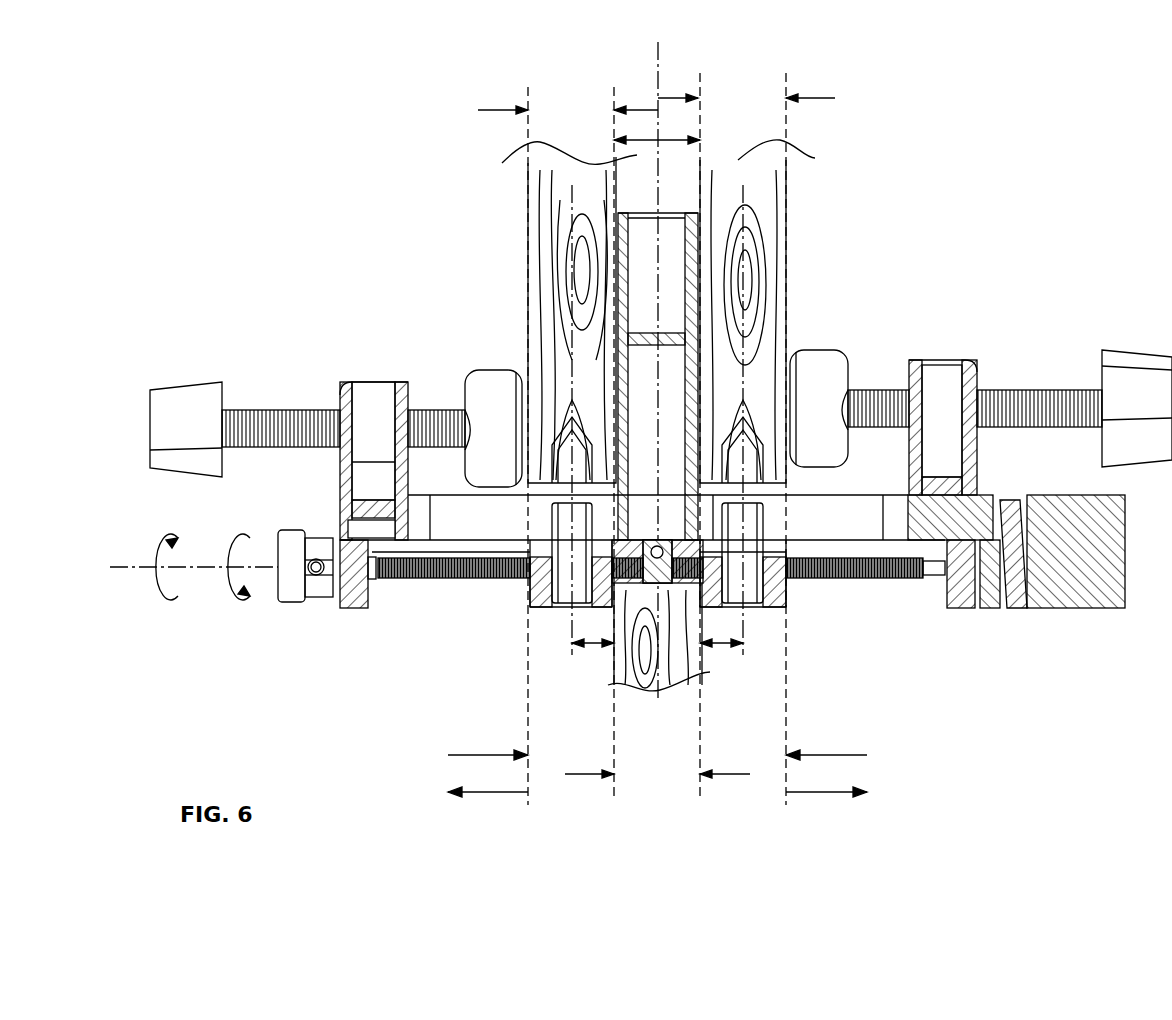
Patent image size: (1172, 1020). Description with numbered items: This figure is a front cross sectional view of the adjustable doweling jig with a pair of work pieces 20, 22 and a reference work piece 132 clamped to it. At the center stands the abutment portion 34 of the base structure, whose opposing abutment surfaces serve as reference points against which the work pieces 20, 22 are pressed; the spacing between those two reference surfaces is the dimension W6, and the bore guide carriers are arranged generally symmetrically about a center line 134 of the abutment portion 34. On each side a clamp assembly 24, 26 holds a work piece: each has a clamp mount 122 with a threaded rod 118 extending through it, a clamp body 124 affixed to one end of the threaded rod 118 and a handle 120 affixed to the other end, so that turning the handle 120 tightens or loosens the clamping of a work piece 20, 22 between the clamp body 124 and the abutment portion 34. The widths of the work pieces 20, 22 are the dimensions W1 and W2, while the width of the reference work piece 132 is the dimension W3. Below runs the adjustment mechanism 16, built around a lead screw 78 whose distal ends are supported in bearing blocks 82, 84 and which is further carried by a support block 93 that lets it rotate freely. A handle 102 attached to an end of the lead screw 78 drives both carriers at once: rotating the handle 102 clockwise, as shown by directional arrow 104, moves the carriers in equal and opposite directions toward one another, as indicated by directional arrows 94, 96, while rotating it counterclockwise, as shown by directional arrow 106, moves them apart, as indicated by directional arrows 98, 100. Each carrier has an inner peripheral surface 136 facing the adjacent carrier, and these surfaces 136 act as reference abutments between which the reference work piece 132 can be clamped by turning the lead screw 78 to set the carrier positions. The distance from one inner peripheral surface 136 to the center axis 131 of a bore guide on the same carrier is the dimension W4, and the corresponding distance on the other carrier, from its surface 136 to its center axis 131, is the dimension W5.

The adjustment mechanism 16 is at (510, 615).
The work piece 20 is at (772, 248).
The work piece 22 is at (545, 252).
The clamp assembly 24 is at (1012, 335).
The clamp assembly 26 is at (318, 330).
The abutment portion 34 is at (700, 484).
The lead screw 78 is at (436, 582).
The bearing block 82 is at (962, 608).
The bearing block 84 is at (362, 608).
The support block 93 is at (652, 546).
The directional arrow 94 is at (485, 755).
The directional arrow 96 is at (825, 755).
The directional arrow 98 is at (485, 792).
The directional arrow 100 is at (825, 792).
The handle 102 is at (288, 602).
The directional arrow 104 is at (152, 592).
The directional arrow 106 is at (224, 592).
The threaded rod 118 is at (272, 410).
The handle 120 is at (180, 384).
The clamp mount 122 is at (367, 382).
The clamp body 124 is at (492, 372).
The center axis 131 is at (540, 142).
The reference work piece 132 is at (645, 672).
The center line 134 is at (658, 118).
The inner peripheral surface 136 is at (614, 670).
The dimension W1 is at (492, 110).
The dimension W2 is at (822, 98).
The dimension W3 is at (657, 773).
The dimension W4 is at (608, 650).
The dimension W5 is at (708, 650).
The dimension W6 is at (655, 140).